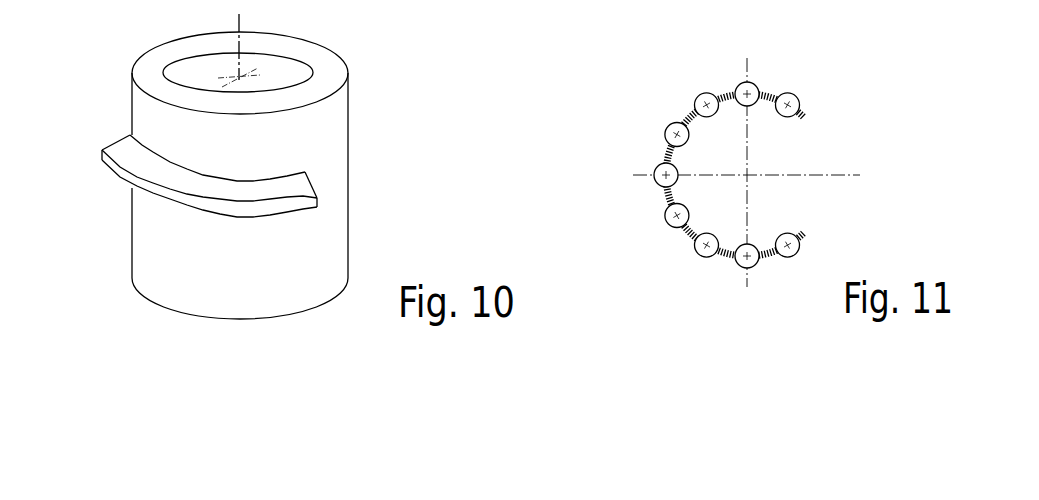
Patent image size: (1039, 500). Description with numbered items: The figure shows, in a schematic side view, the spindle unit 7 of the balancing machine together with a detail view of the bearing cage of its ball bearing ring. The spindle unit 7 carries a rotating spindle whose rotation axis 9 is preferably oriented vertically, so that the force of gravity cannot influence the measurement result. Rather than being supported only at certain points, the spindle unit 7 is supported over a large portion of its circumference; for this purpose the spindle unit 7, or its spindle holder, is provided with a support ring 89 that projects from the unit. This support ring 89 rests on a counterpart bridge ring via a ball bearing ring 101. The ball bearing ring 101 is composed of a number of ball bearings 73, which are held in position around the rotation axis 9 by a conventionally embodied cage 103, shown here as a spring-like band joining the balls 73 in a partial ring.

In FIG. 10, the spindle unit 7 is at (298, 272).
In FIG. 10, the rotation axis 9 is at (240, 17).
In FIG. 11, the rotation axis 9 is at (748, 177).
In FIG. 10, the support ring 89 is at (118, 149).
In FIG. 11, the ball bearing ring 101 is at (732, 188).
In FIG. 11, the cage 103 is at (691, 116).
In FIG. 11, the ball bearings 73 is at (682, 221).